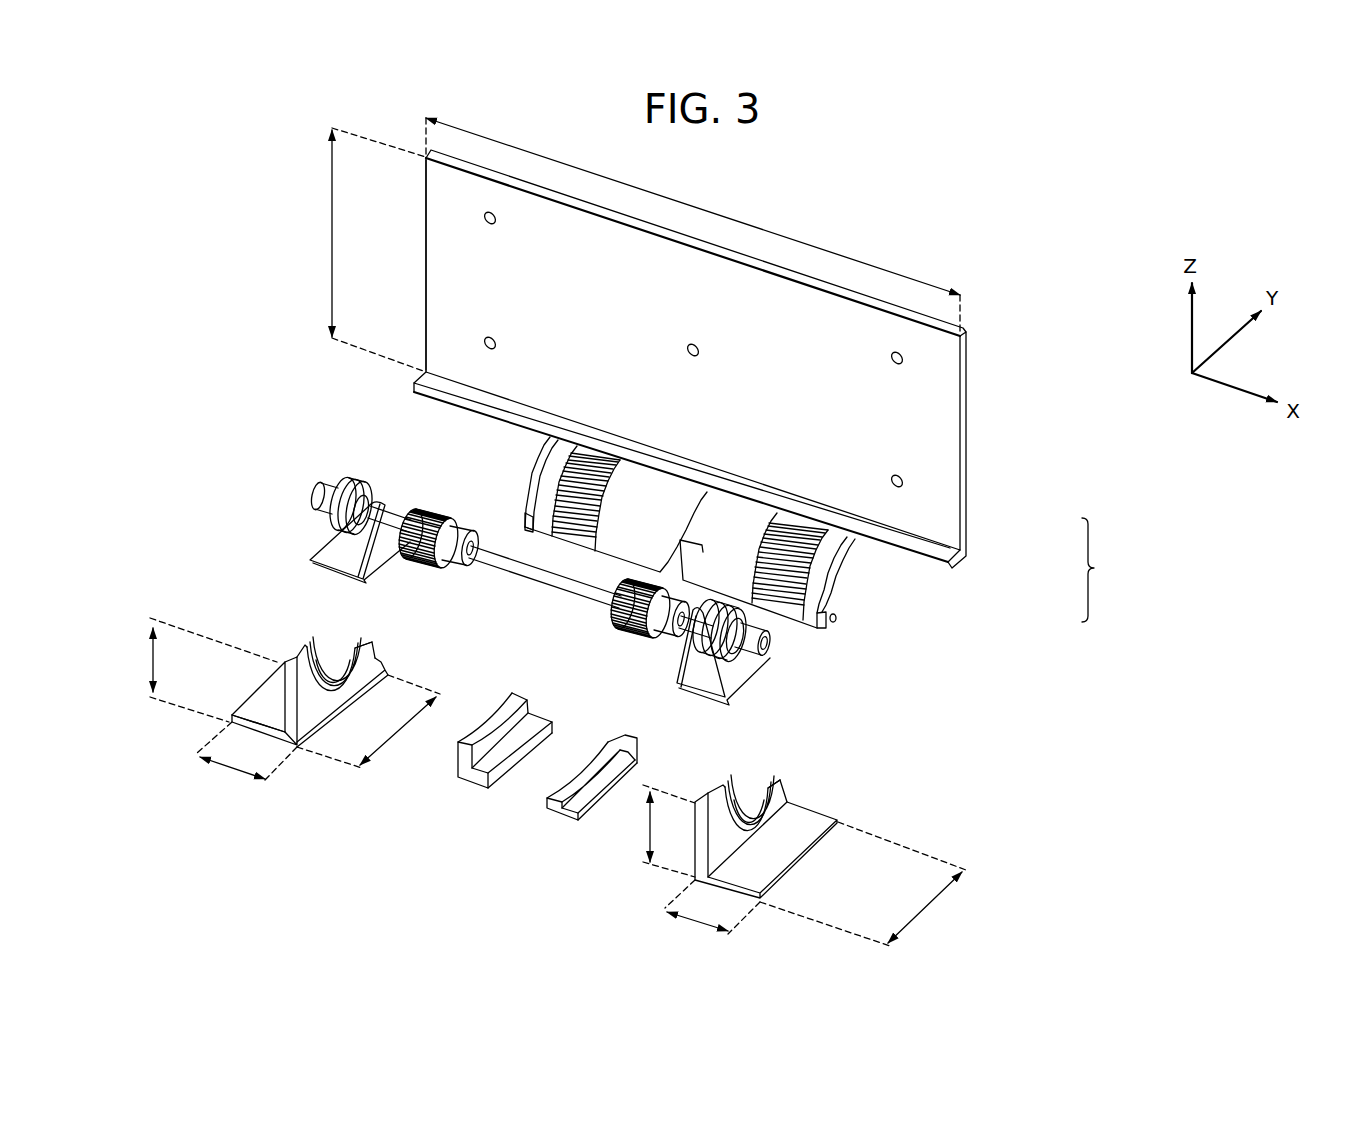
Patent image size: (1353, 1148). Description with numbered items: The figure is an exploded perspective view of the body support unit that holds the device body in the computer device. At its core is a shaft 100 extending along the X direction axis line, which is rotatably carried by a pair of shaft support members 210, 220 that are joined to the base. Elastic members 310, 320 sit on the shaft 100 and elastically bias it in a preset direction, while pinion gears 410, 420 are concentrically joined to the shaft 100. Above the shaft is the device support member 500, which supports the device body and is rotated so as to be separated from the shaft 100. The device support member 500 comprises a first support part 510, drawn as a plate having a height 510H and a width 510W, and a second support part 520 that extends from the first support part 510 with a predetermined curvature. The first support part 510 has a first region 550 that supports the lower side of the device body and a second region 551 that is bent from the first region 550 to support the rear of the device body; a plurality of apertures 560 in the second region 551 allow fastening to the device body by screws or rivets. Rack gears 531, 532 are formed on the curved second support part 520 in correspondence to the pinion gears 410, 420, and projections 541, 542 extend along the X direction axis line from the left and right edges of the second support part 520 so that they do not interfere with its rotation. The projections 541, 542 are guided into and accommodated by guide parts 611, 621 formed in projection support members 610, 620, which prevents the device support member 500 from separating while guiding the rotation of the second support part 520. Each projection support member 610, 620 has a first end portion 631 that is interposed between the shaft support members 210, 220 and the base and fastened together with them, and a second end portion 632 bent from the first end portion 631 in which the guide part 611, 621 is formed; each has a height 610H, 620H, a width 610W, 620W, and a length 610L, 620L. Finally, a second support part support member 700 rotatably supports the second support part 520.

The shaft 100 is at (545, 588).
The shaft support member 210 is at (309, 560).
The shaft support member 220 is at (740, 700).
The elastic member 310 is at (326, 494).
The elastic member 320 is at (760, 655).
The pinion gear 410 is at (412, 548).
The pinion gear 420 is at (632, 628).
The device support member 500 is at (1105, 570).
The first support part 510 is at (980, 512).
The width of first support part 510W is at (693, 225).
The height of first support part 510H is at (350, 250).
The second support part 520 is at (878, 590).
The rack gear 531 is at (545, 472).
The rack gear 532 is at (808, 592).
The projection 541 is at (524, 516).
The projection 542 is at (837, 620).
The first region 550 is at (414, 386).
The second region 551 is at (426, 260).
The apertures 560 is at (903, 359).
The projection support member 610 is at (232, 700).
The height of projection support member 610H is at (189, 670).
The width of projection support member 610W is at (243, 757).
The length of projection support member 610L is at (370, 721).
The guide part 611 is at (343, 680).
The projection support member 620 is at (818, 862).
The height of projection support member 620H is at (646, 831).
The width of projection support member 620W is at (706, 916).
The length of projection support member 620L is at (867, 884).
The guide part 621 is at (722, 830).
The first end portion 631 is at (265, 697).
The second end portion 632 is at (365, 660).
The second support part support member 700 is at (552, 810).